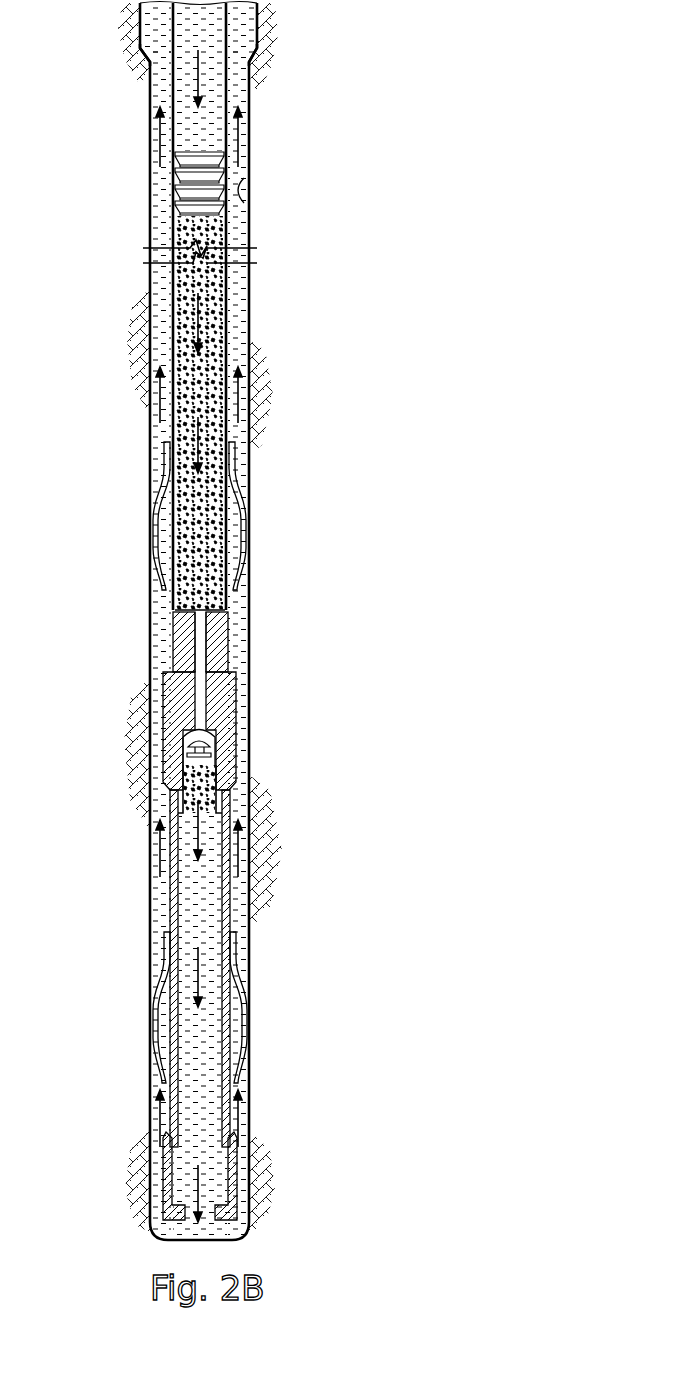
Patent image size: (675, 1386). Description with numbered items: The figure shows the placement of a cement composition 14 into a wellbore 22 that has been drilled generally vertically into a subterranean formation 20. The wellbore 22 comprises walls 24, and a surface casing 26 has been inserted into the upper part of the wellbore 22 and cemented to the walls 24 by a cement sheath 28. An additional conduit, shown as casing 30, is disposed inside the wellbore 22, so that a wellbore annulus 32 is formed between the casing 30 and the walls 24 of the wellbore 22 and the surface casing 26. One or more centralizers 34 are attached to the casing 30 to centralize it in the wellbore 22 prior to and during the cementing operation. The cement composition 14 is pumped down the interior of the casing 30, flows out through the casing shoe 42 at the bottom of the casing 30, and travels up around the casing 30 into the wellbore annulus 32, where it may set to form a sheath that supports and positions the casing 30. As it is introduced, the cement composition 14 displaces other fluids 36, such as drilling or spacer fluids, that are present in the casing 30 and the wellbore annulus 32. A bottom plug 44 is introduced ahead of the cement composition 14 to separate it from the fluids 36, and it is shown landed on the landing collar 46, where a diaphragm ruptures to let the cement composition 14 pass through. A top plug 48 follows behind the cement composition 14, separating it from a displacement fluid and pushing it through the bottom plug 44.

The cement composition 14 is at (197, 312).
The subterranean formation 20 is at (379, 637).
The wellbore 22 is at (258, 458).
The walls 24 is at (243, 198).
The surface casing 26 is at (243, 23).
The cement sheath 28 is at (250, 67).
The casing 30 is at (249, 348).
The wellbore annulus 32 is at (160, 432).
The centralizers 34 is at (160, 973).
The fluids 36 is at (200, 822).
The casing shoe 42 is at (163, 1187).
The bottom plug 44 is at (172, 632).
The landing collar 46 is at (163, 723).
The top plug 48 is at (173, 210).